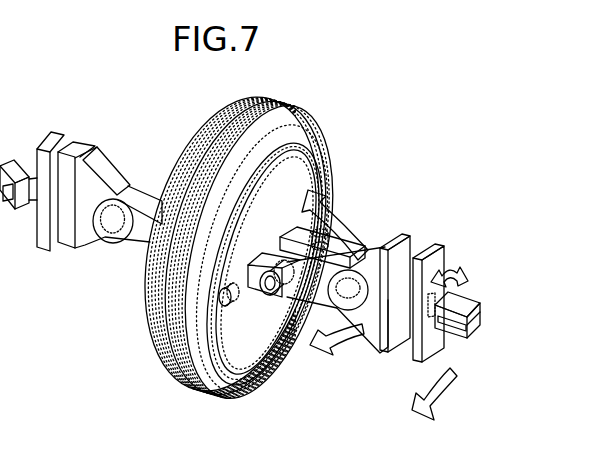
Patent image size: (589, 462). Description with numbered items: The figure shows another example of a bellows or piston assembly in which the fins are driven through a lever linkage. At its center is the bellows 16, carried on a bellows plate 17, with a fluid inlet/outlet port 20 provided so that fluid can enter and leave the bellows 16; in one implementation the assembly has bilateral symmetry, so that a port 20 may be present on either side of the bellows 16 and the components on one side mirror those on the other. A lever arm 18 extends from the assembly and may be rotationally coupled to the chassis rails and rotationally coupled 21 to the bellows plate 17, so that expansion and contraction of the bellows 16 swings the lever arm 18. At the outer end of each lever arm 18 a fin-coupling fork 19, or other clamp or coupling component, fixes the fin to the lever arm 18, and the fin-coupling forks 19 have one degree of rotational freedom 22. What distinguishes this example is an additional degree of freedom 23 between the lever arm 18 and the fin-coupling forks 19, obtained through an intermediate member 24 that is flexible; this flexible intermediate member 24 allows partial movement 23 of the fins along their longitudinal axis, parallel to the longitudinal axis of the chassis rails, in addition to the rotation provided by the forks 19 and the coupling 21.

The bellows 16 is at (306, 108).
The bellows plate 17 is at (298, 170).
The lever arm 18 is at (338, 258).
The fin-coupling fork 19 is at (483, 330).
The fluid inlet/outlet port 20 is at (240, 315).
The rotational coupling 21 is at (351, 206).
The degree of rotational freedom 22 is at (470, 262).
The additional degree of freedom 23 is at (445, 411).
The intermediate member 24 is at (399, 324).